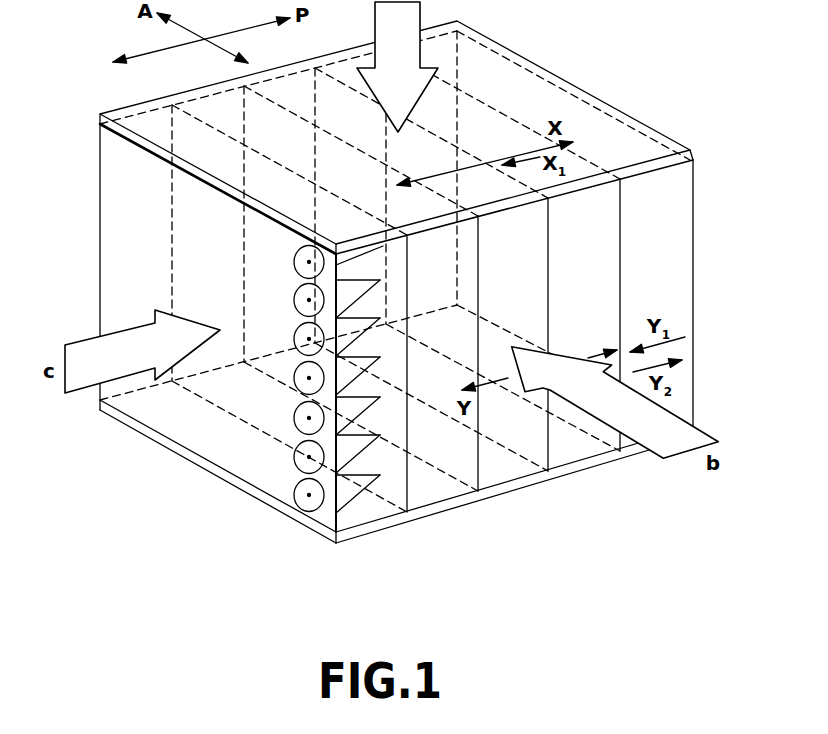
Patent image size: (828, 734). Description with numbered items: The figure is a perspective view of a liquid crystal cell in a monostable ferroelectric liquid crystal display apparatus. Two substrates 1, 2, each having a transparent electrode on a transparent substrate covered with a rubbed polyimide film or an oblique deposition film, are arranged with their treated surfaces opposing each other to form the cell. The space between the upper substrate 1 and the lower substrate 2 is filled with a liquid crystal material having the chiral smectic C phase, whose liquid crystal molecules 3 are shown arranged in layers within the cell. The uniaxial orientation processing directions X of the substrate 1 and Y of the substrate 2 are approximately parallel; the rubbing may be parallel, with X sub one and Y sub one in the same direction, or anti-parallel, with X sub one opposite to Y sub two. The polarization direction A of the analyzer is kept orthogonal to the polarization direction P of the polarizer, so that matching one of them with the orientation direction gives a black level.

The substrate 1 is at (557, 77).
The substrate 2 is at (495, 496).
The liquid crystal molecule 3 is at (335, 474).